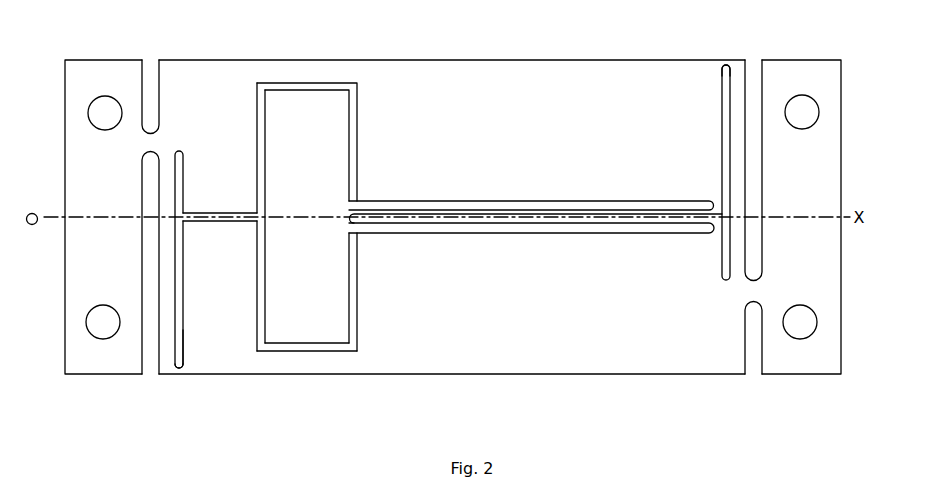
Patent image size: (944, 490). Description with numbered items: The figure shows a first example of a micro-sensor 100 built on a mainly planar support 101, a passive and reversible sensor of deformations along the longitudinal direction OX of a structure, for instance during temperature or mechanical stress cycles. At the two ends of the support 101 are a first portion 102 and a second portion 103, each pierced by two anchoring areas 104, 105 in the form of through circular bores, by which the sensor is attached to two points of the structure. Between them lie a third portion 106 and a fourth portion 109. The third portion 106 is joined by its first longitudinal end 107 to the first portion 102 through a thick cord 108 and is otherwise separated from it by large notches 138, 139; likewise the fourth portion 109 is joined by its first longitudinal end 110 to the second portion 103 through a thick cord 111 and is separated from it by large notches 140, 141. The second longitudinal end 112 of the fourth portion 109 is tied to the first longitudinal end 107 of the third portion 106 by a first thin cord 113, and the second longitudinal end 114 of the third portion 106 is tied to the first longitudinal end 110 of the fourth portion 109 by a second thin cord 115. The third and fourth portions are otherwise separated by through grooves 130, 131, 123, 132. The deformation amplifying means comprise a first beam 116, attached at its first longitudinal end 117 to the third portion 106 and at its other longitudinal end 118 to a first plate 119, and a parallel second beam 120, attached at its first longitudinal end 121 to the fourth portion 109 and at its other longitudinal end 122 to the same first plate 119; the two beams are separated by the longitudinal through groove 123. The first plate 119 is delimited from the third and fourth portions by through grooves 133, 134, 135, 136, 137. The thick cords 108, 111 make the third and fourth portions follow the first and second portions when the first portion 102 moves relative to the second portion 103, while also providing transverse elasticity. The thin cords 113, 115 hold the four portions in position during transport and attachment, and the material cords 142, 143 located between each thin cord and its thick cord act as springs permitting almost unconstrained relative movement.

The resonator 100 is at (453, 224).
The support 101 is at (385, 50).
The first portion 102 is at (75, 200).
The second portion 103 is at (812, 185).
The anchoring areas 104 is at (93, 100).
The anchoring areas 105 is at (819, 108).
The third portion 106 is at (536, 90).
The first longitudinal end 107 is at (183, 343).
The thick cord 108 is at (150, 143).
The fourth portion 109 is at (645, 348).
The first longitudinal end 110 is at (744, 292).
The thick cord 111 is at (745, 292).
The second longitudinal end 112 is at (164, 322).
The first thin cord 113 is at (175, 374).
The second longitudinal end 114 is at (718, 73).
The second thin cord 115 is at (722, 62).
The first beam 116 is at (537, 203).
The first longitudinal end 117 is at (717, 205).
The other longitudinal end 118 is at (360, 205).
The first plate 119 is at (320, 278).
The second beam 120 is at (575, 223).
The first longitudinal end 121 is at (716, 233).
The other longitudinal end 122 is at (360, 228).
The longitudinal through groove 123 is at (453, 221).
The through groove 130 is at (182, 272).
The through groove 131 is at (234, 221).
The through groove 132 is at (722, 135).
The through groove 133 is at (353, 317).
The through groove 134 is at (320, 350).
The through groove 135 is at (257, 275).
The through groove 136 is at (309, 221).
The through groove 137 is at (327, 142).
The large notch 138 is at (150, 83).
The large notch 139 is at (148, 382).
The large notch 140 is at (752, 85).
The large notch 141 is at (754, 352).
The material cord 142 is at (165, 252).
The material cord 143 is at (737, 148).